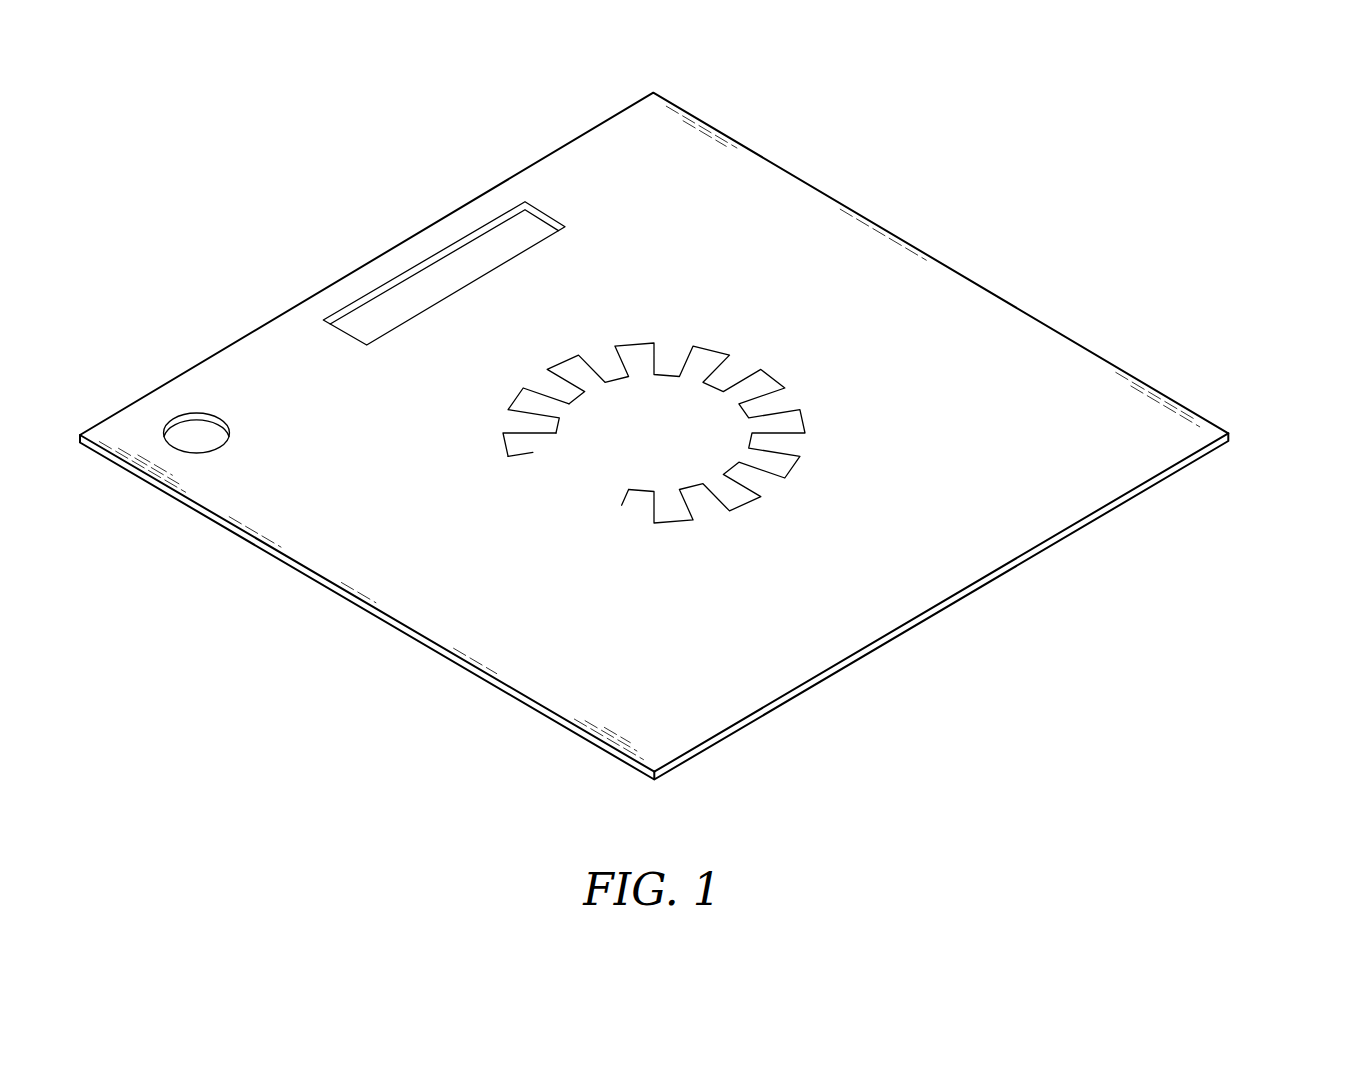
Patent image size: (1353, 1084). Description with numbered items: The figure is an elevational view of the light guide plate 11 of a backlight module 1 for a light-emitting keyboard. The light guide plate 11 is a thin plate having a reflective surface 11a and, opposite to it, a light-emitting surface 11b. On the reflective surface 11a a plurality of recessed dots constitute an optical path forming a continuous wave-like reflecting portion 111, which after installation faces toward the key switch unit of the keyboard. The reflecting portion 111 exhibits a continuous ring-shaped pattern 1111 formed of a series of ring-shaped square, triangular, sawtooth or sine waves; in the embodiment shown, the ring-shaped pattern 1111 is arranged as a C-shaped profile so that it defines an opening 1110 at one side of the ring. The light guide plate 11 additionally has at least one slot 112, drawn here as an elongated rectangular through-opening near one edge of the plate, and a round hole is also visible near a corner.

The backlight module 1 is at (704, 436).
The light guide plate 11 is at (704, 436).
The reflective surface 11a is at (1158, 448).
The light-emitting surface 11b is at (1128, 498).
The continuous wave-like reflecting portion 111 is at (469, 523).
The opening 1110 is at (620, 495).
The continuous ring-shaped pattern 1111 is at (523, 388).
The slot 112 is at (388, 285).